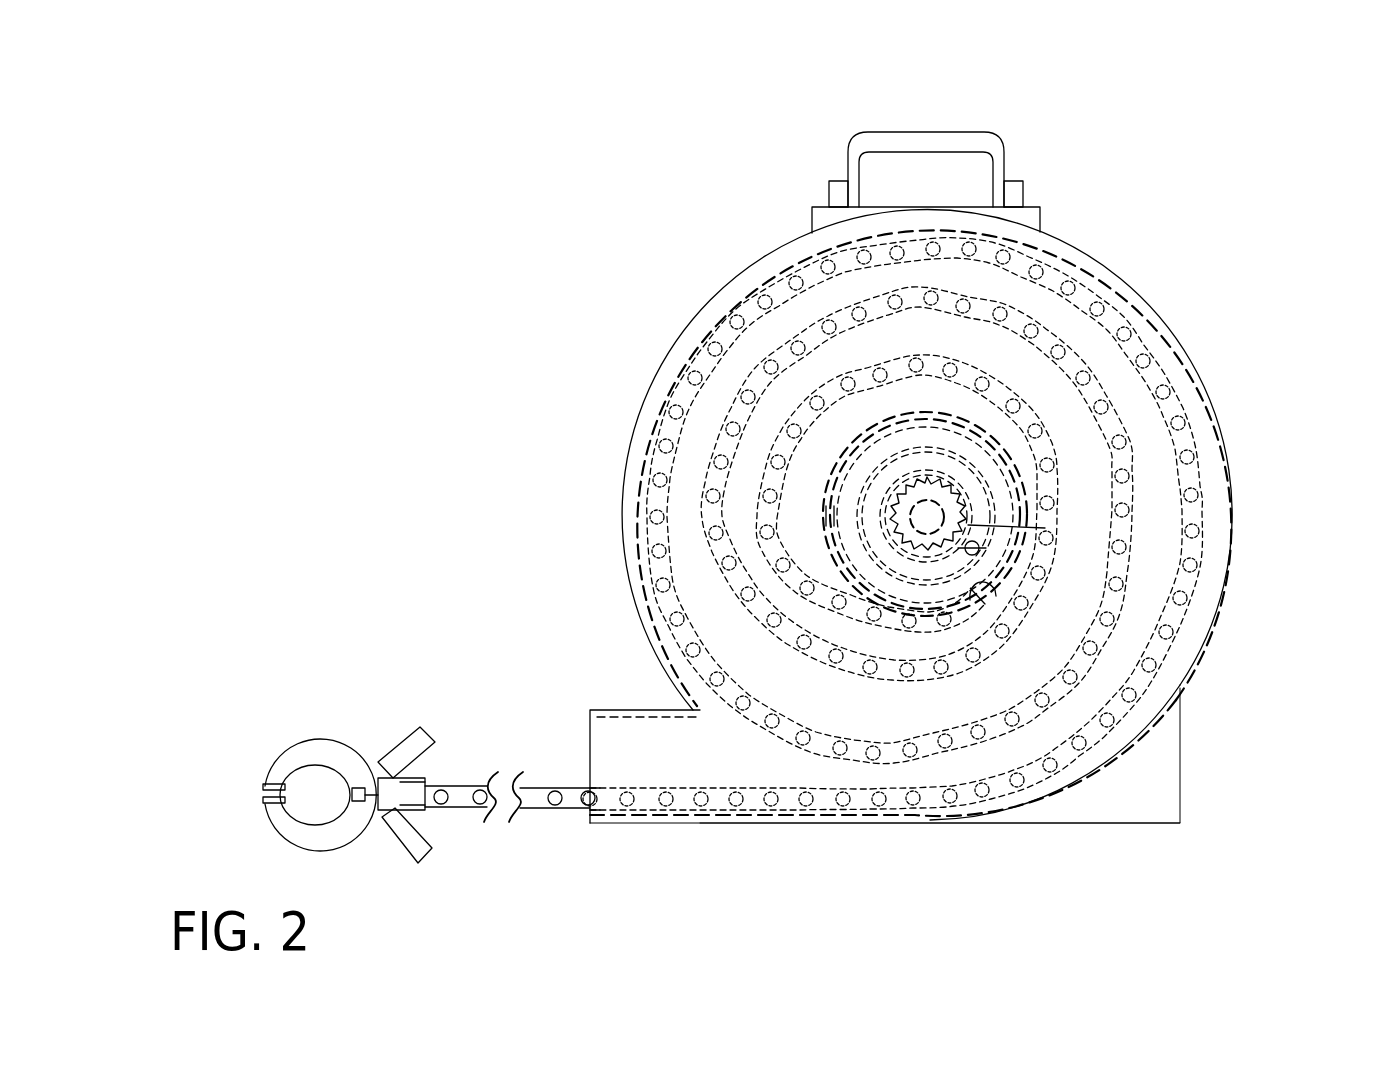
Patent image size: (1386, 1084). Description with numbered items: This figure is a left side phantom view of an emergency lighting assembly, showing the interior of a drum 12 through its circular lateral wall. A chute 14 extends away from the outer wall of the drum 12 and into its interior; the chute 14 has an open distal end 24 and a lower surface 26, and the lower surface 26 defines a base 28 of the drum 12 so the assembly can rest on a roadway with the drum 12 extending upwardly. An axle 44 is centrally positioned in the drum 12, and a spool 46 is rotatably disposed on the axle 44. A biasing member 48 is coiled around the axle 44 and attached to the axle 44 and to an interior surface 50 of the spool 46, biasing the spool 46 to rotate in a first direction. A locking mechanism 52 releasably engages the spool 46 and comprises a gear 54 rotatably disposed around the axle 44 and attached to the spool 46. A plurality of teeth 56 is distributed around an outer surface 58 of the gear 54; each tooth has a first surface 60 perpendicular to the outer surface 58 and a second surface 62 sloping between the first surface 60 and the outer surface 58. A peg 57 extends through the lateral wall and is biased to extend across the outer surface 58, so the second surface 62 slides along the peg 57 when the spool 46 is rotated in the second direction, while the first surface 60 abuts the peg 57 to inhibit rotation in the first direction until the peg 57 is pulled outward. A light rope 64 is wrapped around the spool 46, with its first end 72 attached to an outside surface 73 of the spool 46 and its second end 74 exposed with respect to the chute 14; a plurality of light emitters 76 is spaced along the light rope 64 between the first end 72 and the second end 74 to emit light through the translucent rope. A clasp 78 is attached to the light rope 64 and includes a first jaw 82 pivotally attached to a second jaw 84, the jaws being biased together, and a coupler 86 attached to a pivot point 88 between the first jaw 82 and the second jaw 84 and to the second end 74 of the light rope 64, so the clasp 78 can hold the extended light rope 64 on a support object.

The drum 12 is at (1165, 322).
The chute 14 is at (590, 728).
The distal end 24 is at (590, 758).
The lower surface 26 is at (915, 823).
The base 28 is at (997, 842).
The axle 44 is at (933, 503).
The spool 46 is at (838, 463).
The biasing member 48 is at (882, 462).
The interior surface 50 is at (977, 593).
The locking mechanism 52 is at (982, 505).
The gear 54 is at (912, 558).
The teeth 56 is at (930, 475).
The peg 57 is at (995, 595).
The outer surface 58 is at (985, 549).
The first surface 60 is at (888, 535).
The second surface 62 is at (882, 515).
The light rope 64 is at (458, 787).
The first end 72 is at (912, 560).
The outside surface 73 is at (968, 525).
The second end 74 is at (425, 795).
The light emitters 76 is at (695, 808).
The clasp 78 is at (352, 768).
The first jaw 82 is at (290, 755).
The second jaw 84 is at (352, 837).
The coupler 86 is at (427, 810).
The pivot point 88 is at (377, 813).